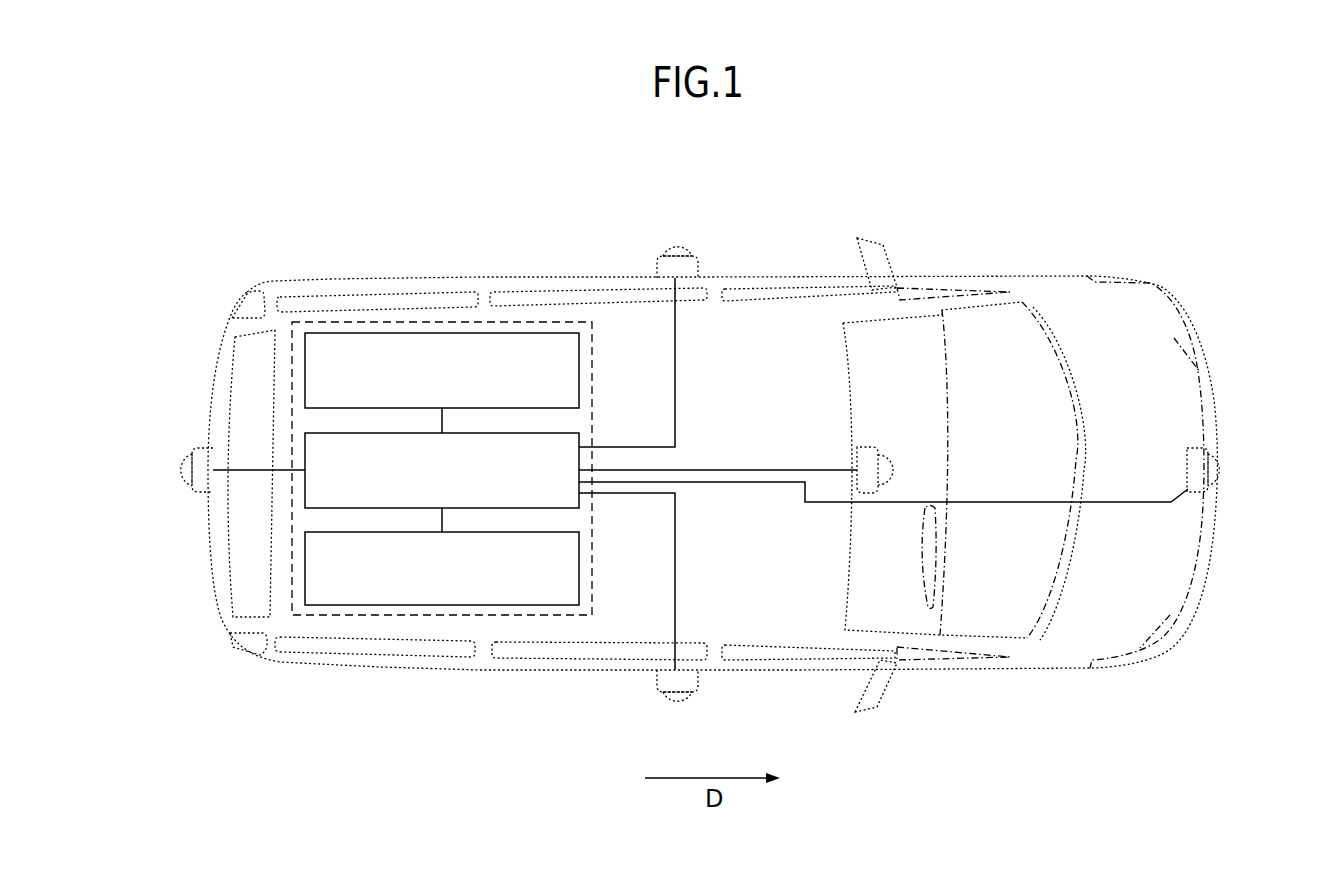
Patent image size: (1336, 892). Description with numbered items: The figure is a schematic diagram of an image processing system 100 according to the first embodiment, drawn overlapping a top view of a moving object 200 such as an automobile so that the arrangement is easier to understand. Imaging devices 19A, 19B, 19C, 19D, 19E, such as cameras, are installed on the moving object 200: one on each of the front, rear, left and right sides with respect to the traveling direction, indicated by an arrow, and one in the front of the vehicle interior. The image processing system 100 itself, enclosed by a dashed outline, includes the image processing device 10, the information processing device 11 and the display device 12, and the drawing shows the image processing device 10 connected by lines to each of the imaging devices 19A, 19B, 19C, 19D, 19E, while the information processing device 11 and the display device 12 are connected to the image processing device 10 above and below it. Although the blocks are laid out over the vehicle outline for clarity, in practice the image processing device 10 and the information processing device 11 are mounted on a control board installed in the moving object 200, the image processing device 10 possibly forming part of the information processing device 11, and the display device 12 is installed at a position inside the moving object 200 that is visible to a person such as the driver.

The moving object 200 is at (1190, 373).
The image processing system 100 is at (420, 617).
The information processing device 11 is at (580, 366).
The image processing device 10 is at (570, 432).
The display device 12 is at (580, 568).
The imaging device 19A is at (1218, 467).
The imaging device 19B is at (180, 465).
The imaging device 19C is at (690, 253).
The imaging device 19D is at (685, 702).
The imaging device 19E is at (878, 468).